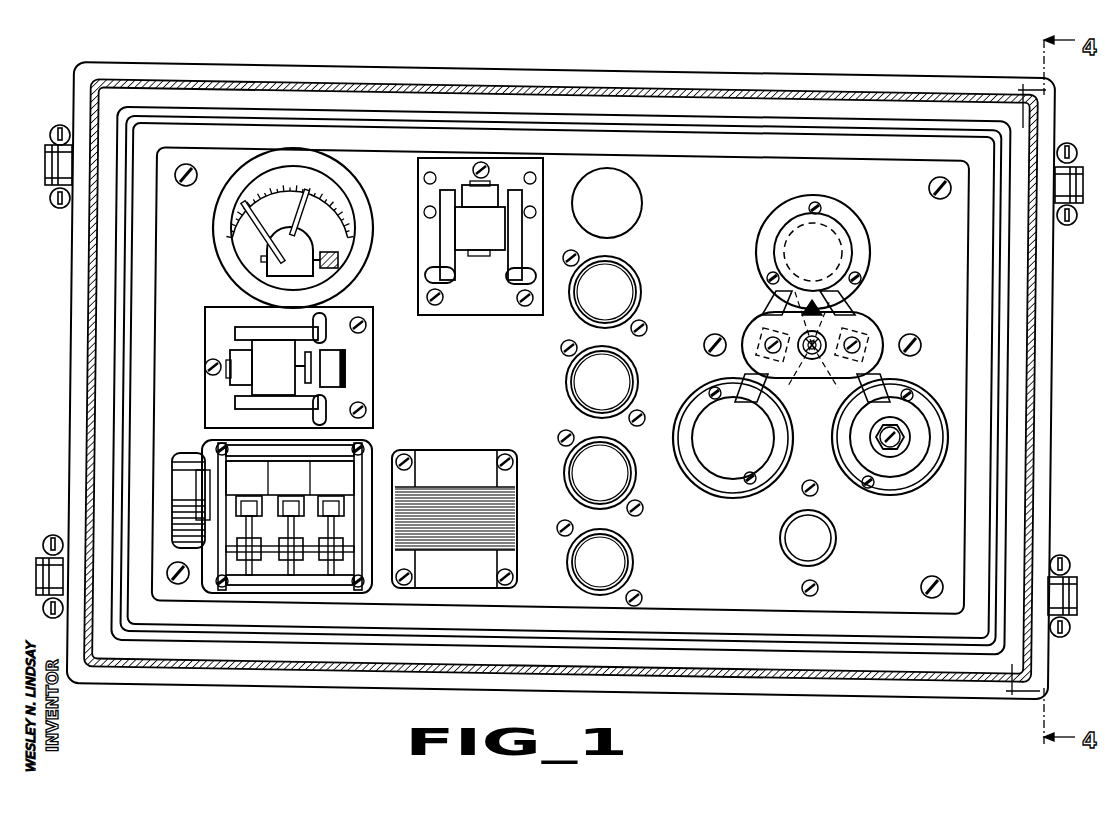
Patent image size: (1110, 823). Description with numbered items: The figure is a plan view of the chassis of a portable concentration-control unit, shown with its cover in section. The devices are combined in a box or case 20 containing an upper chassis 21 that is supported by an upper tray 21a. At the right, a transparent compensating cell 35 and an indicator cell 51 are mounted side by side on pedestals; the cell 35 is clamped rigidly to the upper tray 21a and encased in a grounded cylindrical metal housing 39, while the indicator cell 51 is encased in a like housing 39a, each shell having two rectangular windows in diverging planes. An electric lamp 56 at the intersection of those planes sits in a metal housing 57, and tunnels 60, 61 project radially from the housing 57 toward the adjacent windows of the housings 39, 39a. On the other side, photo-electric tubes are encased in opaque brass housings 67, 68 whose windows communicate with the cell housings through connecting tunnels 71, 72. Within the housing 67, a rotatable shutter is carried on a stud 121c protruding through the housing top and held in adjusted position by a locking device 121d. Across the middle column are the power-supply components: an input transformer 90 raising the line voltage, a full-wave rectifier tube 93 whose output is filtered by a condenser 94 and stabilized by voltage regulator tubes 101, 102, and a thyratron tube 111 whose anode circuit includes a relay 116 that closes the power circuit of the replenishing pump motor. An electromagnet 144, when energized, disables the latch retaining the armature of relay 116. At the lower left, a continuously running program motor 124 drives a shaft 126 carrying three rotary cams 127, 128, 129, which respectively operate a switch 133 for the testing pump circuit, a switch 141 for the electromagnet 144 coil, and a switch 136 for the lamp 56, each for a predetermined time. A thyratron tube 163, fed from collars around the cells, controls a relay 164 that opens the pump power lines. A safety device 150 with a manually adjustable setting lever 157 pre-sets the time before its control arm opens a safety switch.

The box or case 20 is at (924, 86).
The upper chassis 21 is at (507, 378).
The upper tray 21a is at (143, 270).
The safety device 150 is at (223, 214).
The manually adjustable setting lever 157 is at (338, 268).
The relay 164 is at (428, 198).
The condenser 94 is at (630, 201).
The full-wave-rectifier tube 93 is at (618, 302).
The voltage regulator tube 101 is at (625, 375).
The voltage regulator tube 102 is at (612, 465).
The thyratron tube 111 is at (608, 568).
The relay 116 is at (360, 342).
The electromagnet 144 is at (337, 373).
The program motor 124 is at (183, 473).
The switch 136 is at (259, 492).
The switch 141 is at (302, 492).
The switch 133 is at (342, 494).
The rotary cam 129 is at (247, 526).
The rotary cam 128 is at (287, 530).
The rotary cam 127 is at (332, 528).
The shaft 126 is at (346, 546).
The input transformer 90 is at (493, 518).
The housing 57 is at (838, 240).
The electric lamp 56 is at (843, 240).
The housing 39a is at (815, 268).
The cylindrical metal shell or housing 39 is at (812, 348).
The indicator cell 51 is at (752, 335).
The cell 35 is at (866, 335).
The tunnel 61 is at (792, 296).
The tunnel 60 is at (840, 310).
The connecting tunnel 72 is at (745, 368).
The connecting tunnel 71 is at (868, 372).
The housing 68 is at (712, 458).
The housing 67 is at (911, 420).
The stud 121c is at (895, 458).
The locking device 121d is at (876, 439).
The thyratron tube 163 is at (815, 538).